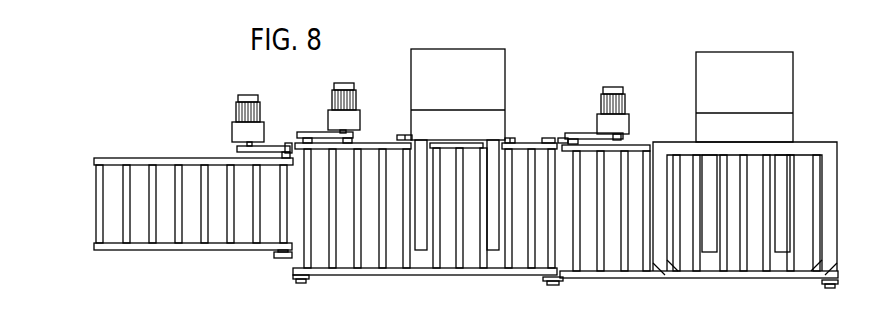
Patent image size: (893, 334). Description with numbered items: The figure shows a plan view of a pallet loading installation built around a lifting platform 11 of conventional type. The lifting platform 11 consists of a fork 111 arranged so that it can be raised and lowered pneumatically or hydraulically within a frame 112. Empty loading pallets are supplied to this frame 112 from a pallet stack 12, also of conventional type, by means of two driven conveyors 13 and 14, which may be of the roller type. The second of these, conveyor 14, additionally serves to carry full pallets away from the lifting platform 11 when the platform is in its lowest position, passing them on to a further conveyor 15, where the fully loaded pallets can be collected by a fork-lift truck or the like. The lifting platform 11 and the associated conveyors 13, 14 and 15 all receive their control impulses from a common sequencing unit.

The lifting platform 11 is at (403, 73).
The pallet stack 12 is at (682, 73).
The driven conveyor 13 is at (637, 147).
The driven conveyor 14 is at (527, 147).
The further conveyor 15 is at (166, 158).
The fork 111 is at (492, 245).
The frame 112 is at (462, 117).